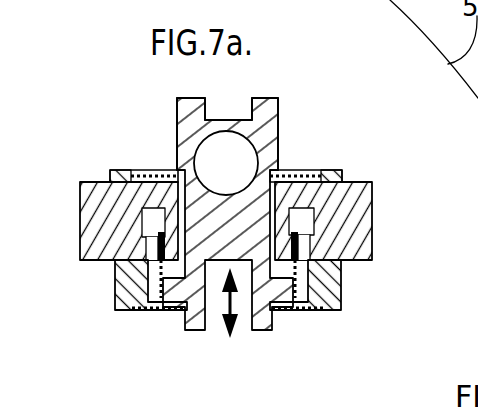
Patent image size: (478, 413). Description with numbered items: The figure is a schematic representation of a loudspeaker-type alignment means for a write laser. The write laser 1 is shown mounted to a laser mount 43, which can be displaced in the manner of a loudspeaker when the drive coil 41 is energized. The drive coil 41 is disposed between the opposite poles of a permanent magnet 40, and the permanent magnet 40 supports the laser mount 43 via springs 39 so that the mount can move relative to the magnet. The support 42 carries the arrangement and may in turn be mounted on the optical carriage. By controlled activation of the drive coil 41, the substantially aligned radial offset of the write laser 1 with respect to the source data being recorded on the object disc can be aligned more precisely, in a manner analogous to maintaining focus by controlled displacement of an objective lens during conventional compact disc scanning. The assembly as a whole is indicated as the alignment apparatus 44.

The write laser 1 is at (244, 147).
The springs 39 is at (298, 180).
The permanent magnet 40 is at (365, 222).
The drive coil 41 is at (347, 302).
The support 42 is at (118, 295).
The laser mount 43 is at (177, 150).
The slideway alignment apparatus 44 is at (67, 82).